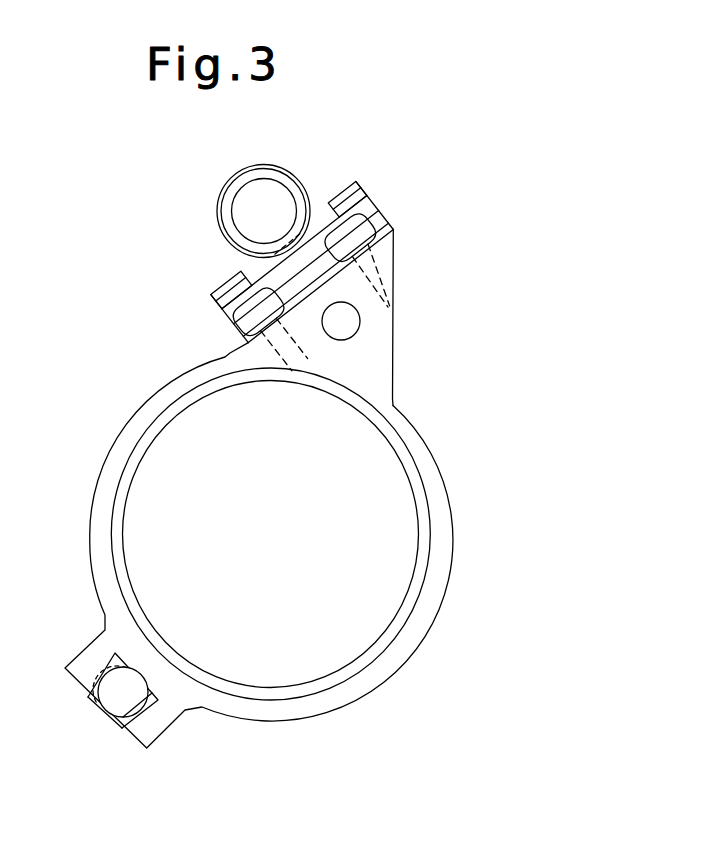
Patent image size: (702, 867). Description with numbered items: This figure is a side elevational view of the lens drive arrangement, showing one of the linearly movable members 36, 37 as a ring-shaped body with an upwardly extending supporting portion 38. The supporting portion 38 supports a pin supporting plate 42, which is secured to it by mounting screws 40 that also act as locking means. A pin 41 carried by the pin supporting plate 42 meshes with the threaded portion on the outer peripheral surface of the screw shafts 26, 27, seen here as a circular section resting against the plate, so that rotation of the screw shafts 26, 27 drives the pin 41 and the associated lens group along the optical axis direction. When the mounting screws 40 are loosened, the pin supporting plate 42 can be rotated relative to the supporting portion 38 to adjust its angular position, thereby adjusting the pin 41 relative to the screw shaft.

The first screw shaft 26 is at (218, 207).
The second screw shaft 27 is at (219, 192).
The linearly movable member 36 is at (328, 545).
The linearly movable member 37 is at (455, 463).
The supporting portion 38 is at (380, 315).
The mounting screw 40 is at (370, 213).
The pin 41 is at (317, 213).
The pin supporting plate 42 is at (370, 208).